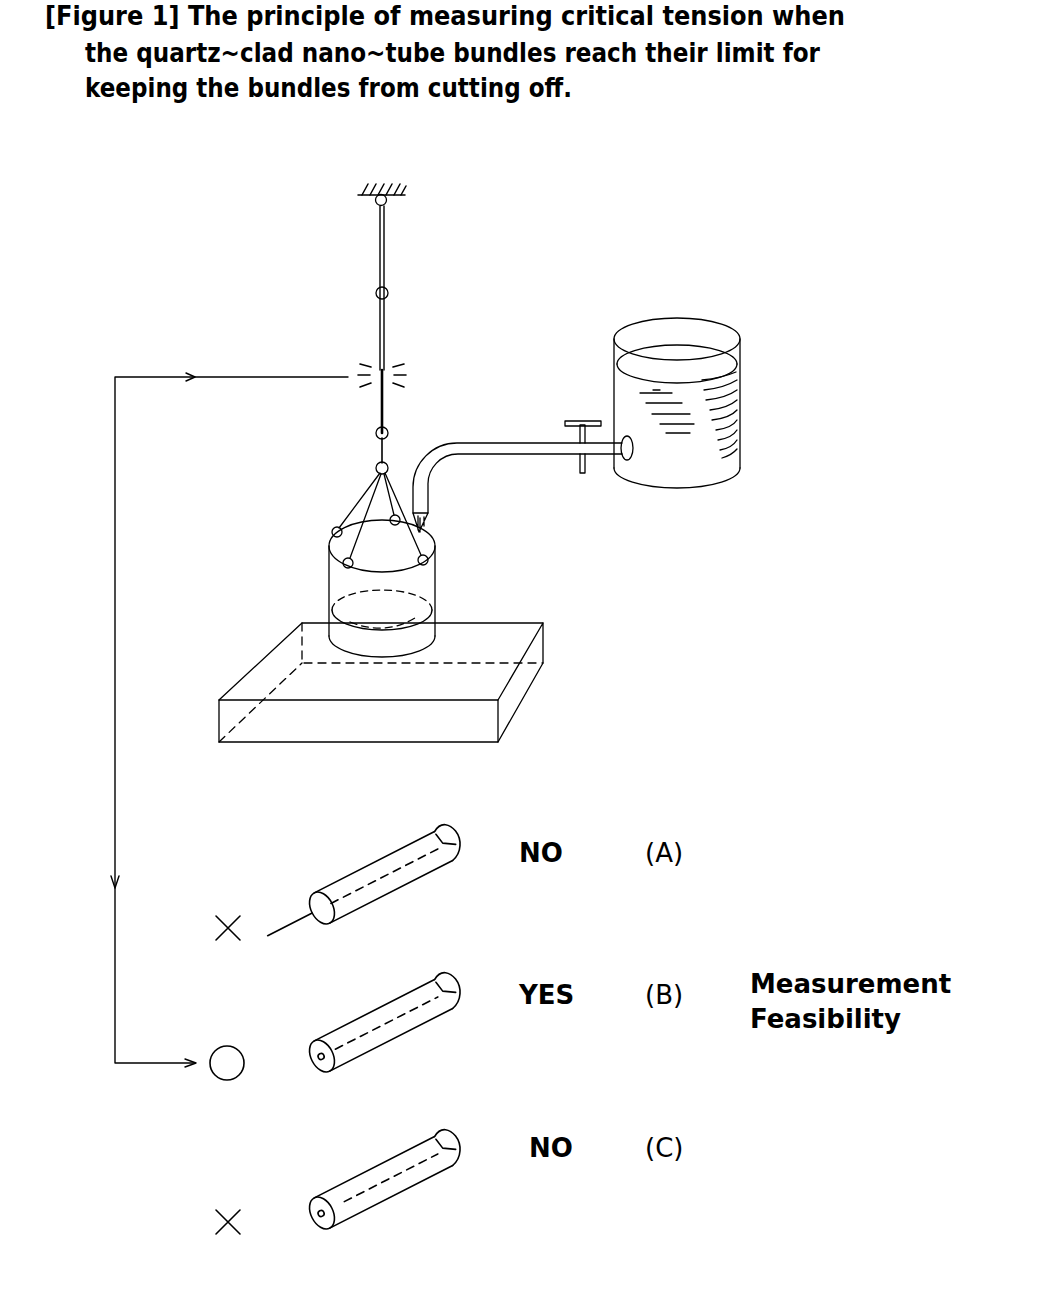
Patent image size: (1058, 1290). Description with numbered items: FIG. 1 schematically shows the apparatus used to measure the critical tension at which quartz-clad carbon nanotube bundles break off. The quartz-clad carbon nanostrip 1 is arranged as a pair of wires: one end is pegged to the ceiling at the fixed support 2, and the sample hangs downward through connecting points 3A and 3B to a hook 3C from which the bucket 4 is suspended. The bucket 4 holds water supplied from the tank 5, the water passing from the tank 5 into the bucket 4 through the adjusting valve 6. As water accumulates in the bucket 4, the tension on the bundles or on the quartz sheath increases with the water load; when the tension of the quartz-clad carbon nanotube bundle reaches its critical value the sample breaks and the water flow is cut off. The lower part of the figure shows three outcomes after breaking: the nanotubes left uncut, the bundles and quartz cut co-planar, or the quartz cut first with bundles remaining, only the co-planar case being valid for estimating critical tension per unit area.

The quartz-clad carbon nanostrip 1 is at (390, 350).
The fixed support 2 is at (386, 185).
The upper connecting point 3A is at (388, 290).
The lower connecting point 3B is at (388, 430).
The hook connecting point 3C is at (372, 470).
The bucket 4 is at (436, 588).
The tank 5 is at (700, 320).
The adjusting valve 6 is at (572, 462).